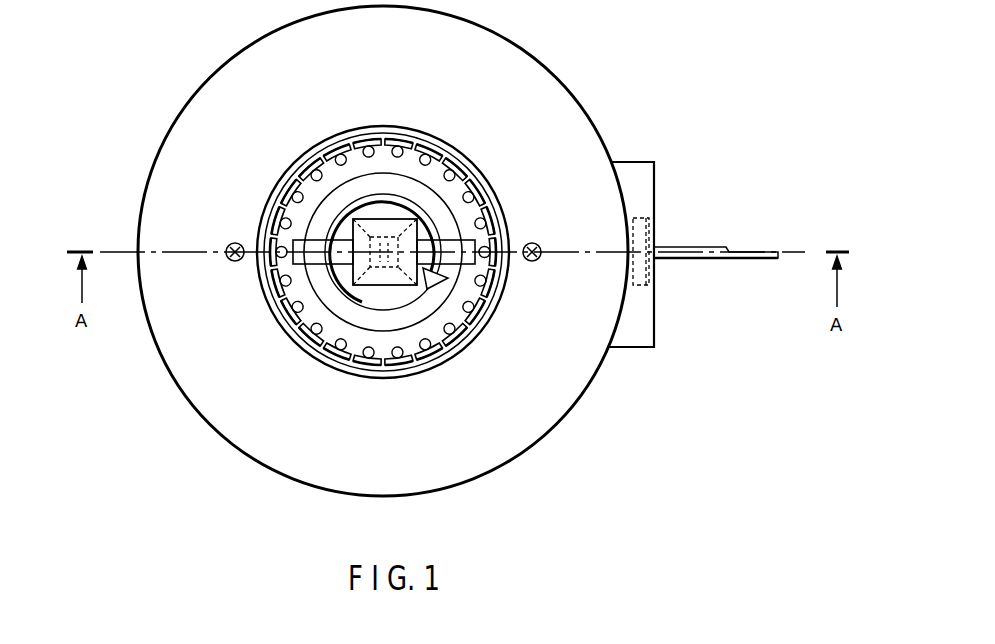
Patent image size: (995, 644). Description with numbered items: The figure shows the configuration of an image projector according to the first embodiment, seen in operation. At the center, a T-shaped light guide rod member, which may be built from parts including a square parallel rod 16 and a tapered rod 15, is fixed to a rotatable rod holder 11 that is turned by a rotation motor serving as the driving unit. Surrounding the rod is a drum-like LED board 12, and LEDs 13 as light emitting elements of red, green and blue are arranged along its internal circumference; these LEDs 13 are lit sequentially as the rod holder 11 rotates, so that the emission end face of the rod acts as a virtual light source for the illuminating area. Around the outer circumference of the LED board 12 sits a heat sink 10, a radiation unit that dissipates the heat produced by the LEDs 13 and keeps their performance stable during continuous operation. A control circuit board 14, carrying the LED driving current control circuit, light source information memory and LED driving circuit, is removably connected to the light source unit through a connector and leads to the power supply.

The heat sink 10 is at (215, 430).
The rod holder 11 is at (399, 331).
The LED board 12 is at (455, 355).
The LEDs 13 is at (488, 312).
The control circuit board 14 is at (639, 348).
The tapered rod 15 is at (398, 219).
The parallel rod 16 is at (440, 240).